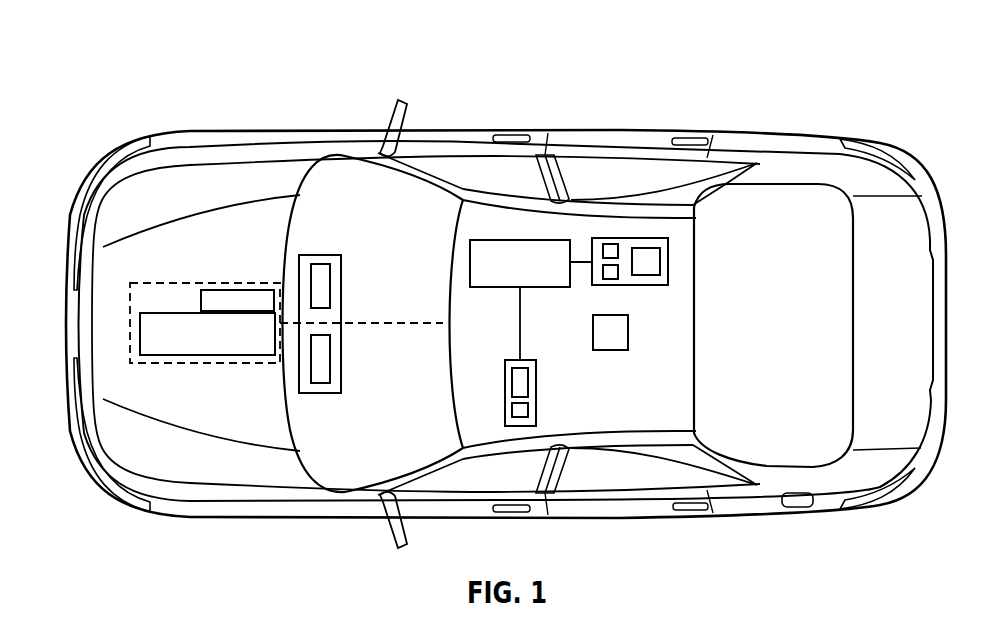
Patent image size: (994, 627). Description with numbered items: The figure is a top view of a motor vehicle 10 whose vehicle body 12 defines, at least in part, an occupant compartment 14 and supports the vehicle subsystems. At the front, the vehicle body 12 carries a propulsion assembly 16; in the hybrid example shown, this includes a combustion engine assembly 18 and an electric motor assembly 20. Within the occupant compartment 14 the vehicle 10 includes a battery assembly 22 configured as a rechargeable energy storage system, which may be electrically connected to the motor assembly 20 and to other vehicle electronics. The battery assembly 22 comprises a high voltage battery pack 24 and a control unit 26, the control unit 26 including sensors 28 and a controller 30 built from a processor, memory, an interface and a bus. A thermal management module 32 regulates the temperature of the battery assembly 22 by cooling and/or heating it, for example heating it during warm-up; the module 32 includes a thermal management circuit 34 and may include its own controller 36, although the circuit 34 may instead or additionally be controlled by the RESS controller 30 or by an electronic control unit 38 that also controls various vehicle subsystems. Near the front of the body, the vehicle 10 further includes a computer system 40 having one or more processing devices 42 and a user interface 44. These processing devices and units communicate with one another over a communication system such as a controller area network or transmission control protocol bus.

The motor vehicle 10 is at (97, 56).
The vehicle body 12 is at (554, 131).
The occupant compartment 14 is at (593, 432).
The propulsion assembly 16 is at (170, 282).
The combustion engine assembly 18 is at (232, 356).
The electric motor assembly 20 is at (252, 290).
The battery assembly 22 is at (495, 290).
The high voltage battery pack 24 is at (480, 263).
The control unit 26 is at (667, 242).
The sensors 28 is at (610, 281).
The controller 30 is at (661, 262).
The thermal management module 32 is at (530, 358).
The thermal management circuit 34 is at (512, 380).
The controller 36 is at (527, 410).
The electronic control unit (ECU) 38 is at (610, 352).
The computer system 40 is at (322, 243).
The processing devices 42 is at (330, 358).
The user interface 44 is at (330, 290).